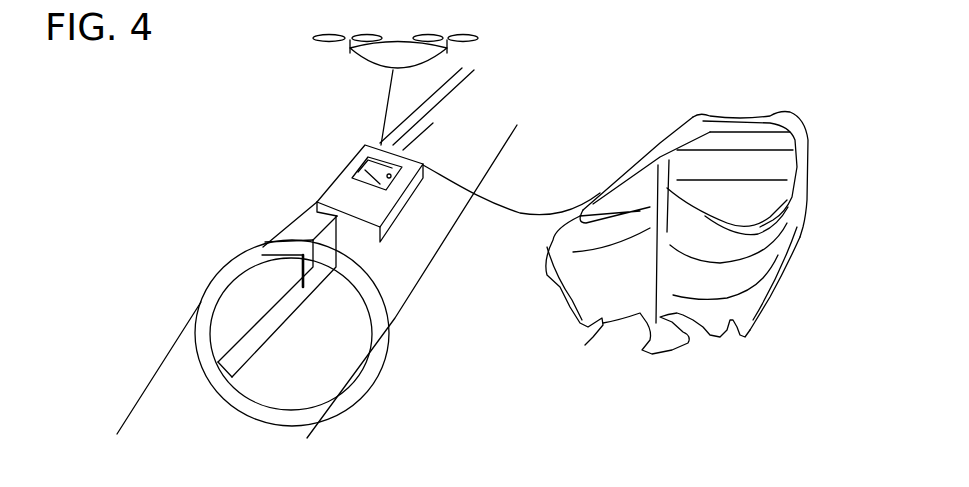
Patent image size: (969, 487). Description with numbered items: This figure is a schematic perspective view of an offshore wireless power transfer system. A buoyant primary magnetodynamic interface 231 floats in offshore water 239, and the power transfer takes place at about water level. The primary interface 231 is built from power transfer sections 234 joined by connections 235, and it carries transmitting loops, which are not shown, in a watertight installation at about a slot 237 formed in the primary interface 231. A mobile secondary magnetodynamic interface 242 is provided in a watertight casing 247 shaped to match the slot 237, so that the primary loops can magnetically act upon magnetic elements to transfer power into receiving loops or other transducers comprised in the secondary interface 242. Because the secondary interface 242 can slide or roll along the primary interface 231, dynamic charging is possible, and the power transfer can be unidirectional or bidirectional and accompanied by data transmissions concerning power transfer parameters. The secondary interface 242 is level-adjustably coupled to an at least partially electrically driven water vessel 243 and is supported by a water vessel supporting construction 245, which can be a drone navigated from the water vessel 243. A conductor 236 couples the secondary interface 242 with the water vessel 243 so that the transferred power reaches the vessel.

The buoyant primary magnetodynamic interface 231 is at (150, 292).
The power transfer sections 234 is at (454, 262).
The connections 235 is at (377, 343).
The conductor 236 is at (496, 206).
The slot 237 is at (297, 283).
The offshore water 239 is at (690, 408).
The mobile secondary magnetodynamic interface 242 is at (320, 157).
The water vessel 243 is at (780, 342).
The water vessel supporting construction 245 is at (498, 53).
The watertight casing 247 is at (337, 223).